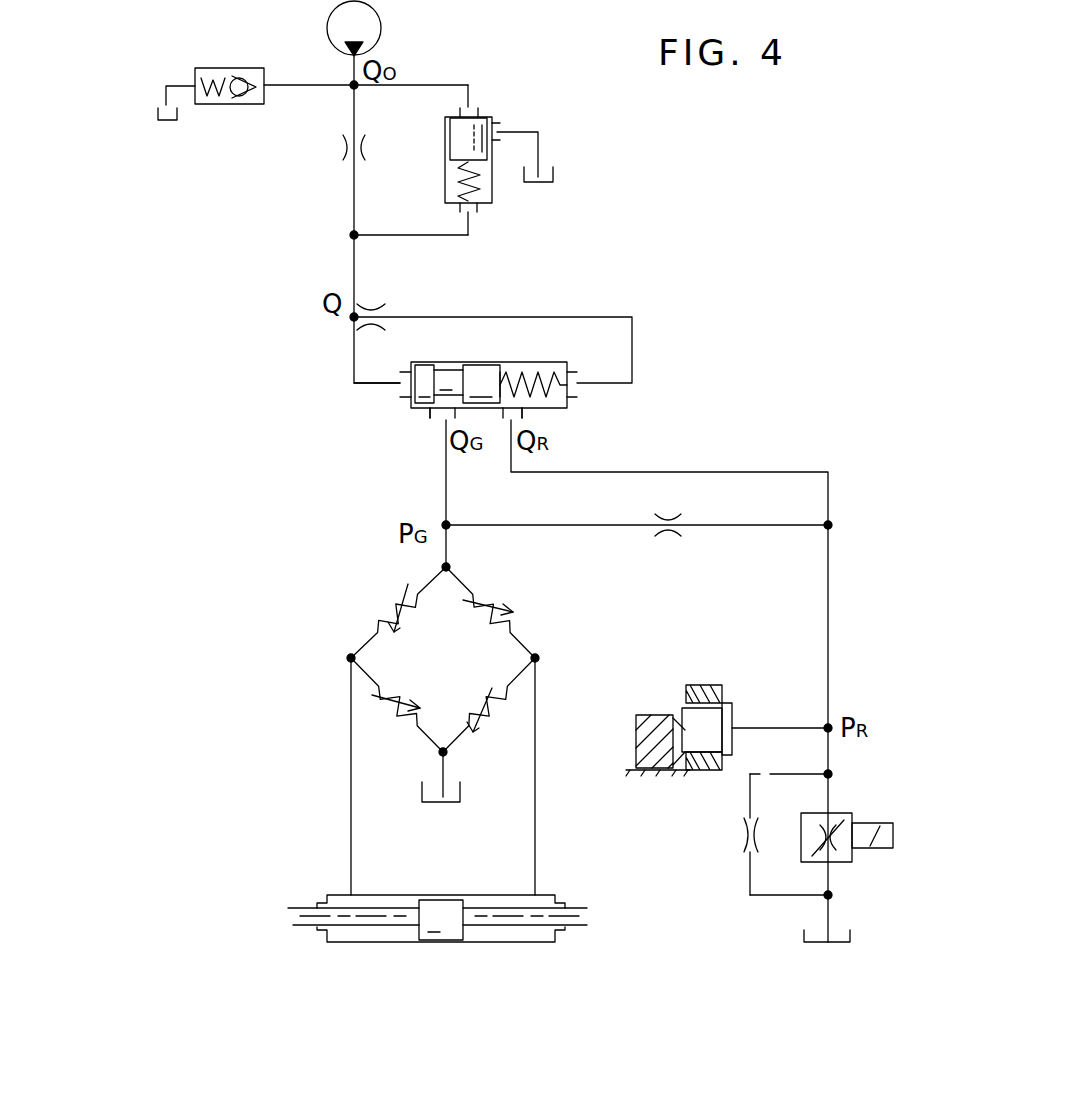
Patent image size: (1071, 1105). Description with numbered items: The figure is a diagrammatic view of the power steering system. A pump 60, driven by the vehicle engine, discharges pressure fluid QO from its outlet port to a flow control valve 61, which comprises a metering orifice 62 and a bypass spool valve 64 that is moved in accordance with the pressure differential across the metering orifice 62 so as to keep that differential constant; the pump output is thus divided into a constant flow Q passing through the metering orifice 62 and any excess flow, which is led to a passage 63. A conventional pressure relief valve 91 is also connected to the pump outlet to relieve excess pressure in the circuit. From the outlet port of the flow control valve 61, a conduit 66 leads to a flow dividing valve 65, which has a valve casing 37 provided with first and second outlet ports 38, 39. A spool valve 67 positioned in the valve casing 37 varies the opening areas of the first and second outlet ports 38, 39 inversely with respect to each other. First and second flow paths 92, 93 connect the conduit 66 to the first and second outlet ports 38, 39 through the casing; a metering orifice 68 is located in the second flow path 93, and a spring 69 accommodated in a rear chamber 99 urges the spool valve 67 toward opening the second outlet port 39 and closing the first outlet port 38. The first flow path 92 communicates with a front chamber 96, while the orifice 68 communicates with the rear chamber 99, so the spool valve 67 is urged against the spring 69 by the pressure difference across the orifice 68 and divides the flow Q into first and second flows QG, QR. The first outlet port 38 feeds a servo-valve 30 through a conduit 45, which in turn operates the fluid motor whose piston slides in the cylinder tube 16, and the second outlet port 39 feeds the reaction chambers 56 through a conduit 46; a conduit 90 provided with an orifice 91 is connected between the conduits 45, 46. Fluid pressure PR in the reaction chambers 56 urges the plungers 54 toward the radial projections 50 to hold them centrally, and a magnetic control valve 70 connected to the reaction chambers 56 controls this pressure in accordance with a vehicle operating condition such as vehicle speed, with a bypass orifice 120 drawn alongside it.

The pump 60 is at (372, 22).
The pressure relief valve / orifice 91 is at (228, 70).
The metering orifice 62 is at (340, 148).
The flow control valve 61 is at (447, 163).
The bypass spool valve 64 is at (455, 150).
The passage 63 is at (538, 145).
The conduit 66 is at (353, 272).
The metering orifice 68 is at (375, 305).
The spool valve 67 is at (487, 365).
The rear chamber 99 is at (516, 368).
The flow dividing valve 65 is at (540, 362).
The second flow path 93 is at (615, 317).
The spring 69 is at (568, 362).
The front chamber 96 is at (410, 362).
The first flow path 92 is at (375, 383).
The valve casing 37 is at (550, 344).
The first outlet port 38 is at (436, 418).
The second outlet port 39 is at (518, 418).
The conduit 46 is at (777, 471).
The conduit 45 is at (448, 497).
The servo-valve 30 is at (370, 625).
The conduit 90 is at (735, 527).
The radial projection 50 is at (650, 720).
The reaction chamber 56 is at (730, 697).
The plunger 54 is at (700, 730).
The magnetic control valve 70 is at (840, 813).
The bypass orifice 120 is at (740, 835).
The cylinder tube 16 is at (503, 944).